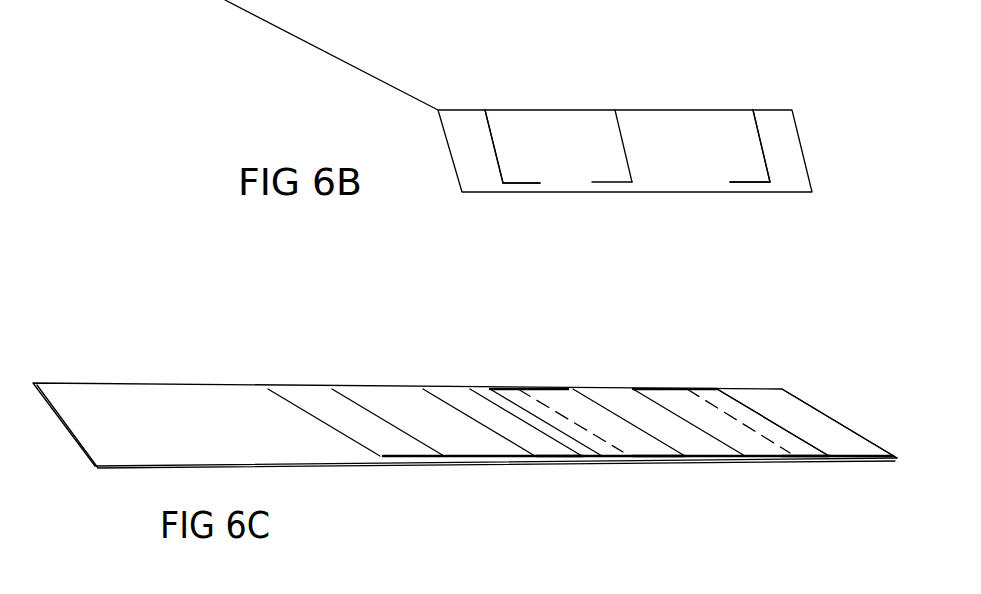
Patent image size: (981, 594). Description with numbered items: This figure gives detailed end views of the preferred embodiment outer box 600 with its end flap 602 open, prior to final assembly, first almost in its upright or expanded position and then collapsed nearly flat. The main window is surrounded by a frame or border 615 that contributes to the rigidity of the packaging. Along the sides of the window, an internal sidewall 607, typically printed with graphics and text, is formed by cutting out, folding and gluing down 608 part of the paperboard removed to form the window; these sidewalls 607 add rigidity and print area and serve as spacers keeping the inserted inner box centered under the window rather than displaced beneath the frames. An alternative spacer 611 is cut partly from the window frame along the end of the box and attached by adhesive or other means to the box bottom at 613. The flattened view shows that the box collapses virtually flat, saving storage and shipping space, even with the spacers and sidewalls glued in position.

In FIG. 6B, the sensor strip assembly 600 is at (803, 152).
In FIG. 6B, the substrate plate 602 is at (305, 42).
In FIG. 6C, the substrate plate 602 is at (165, 400).
In FIG. 6B, the internal sidewall 607 is at (490, 130).
In FIG. 6C, the internal sidewall 607 is at (423, 389).
In FIG. 6B, the glued-down portion 608 is at (527, 185).
In FIG. 6C, the glued-down portion 608 is at (583, 463).
In FIG. 6B, the alternative spacer 611 is at (627, 157).
In FIG. 6C, the alternative spacer 611 is at (568, 389).
In FIG. 6B, the box bottom attachment 613 is at (610, 185).
In FIG. 6C, the box bottom attachment 613 is at (683, 463).
In FIG. 6B, the frame or border 615 is at (460, 110).
In FIG. 6C, the frame or border 615 is at (313, 395).